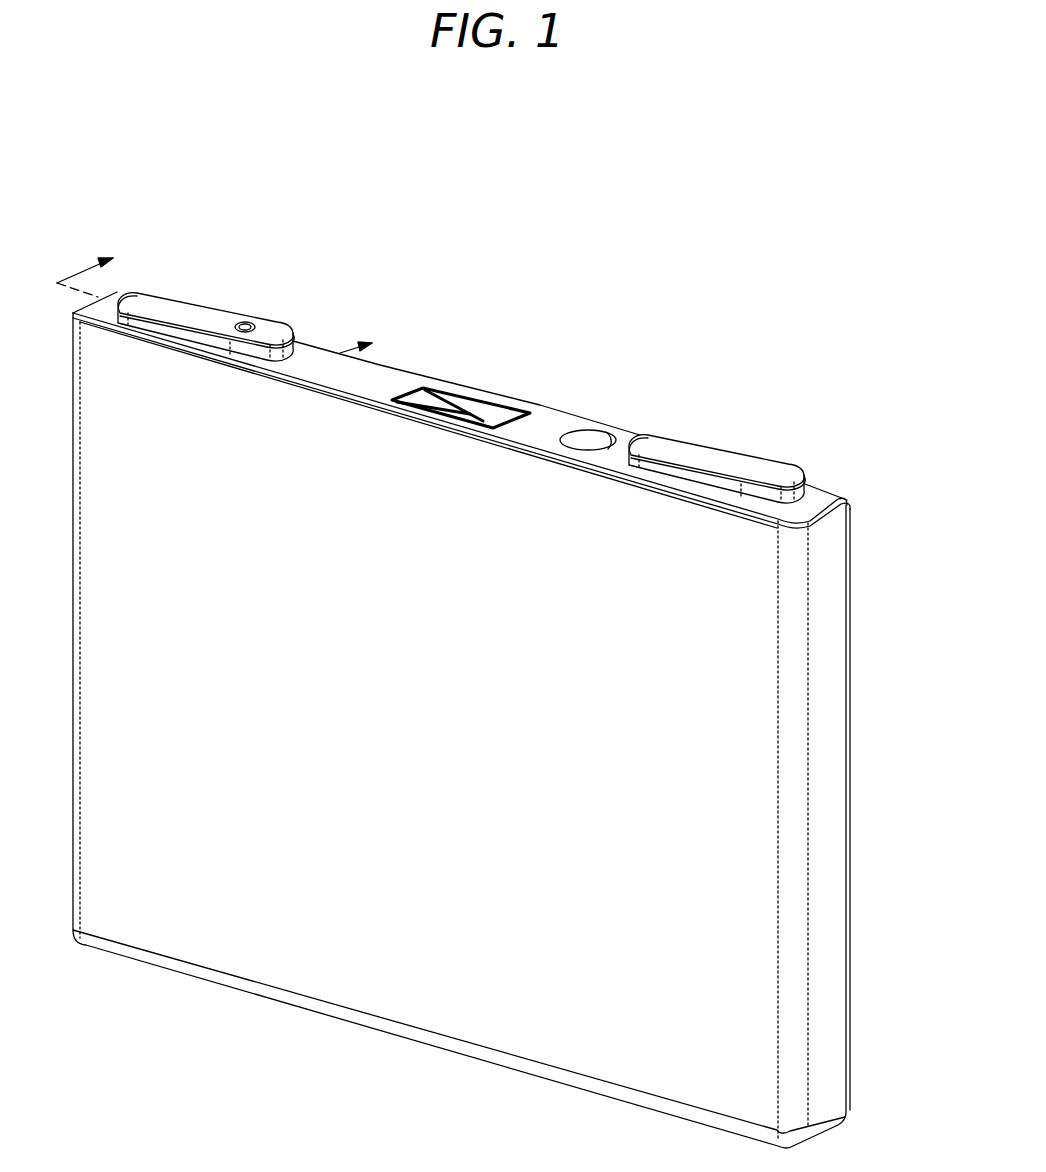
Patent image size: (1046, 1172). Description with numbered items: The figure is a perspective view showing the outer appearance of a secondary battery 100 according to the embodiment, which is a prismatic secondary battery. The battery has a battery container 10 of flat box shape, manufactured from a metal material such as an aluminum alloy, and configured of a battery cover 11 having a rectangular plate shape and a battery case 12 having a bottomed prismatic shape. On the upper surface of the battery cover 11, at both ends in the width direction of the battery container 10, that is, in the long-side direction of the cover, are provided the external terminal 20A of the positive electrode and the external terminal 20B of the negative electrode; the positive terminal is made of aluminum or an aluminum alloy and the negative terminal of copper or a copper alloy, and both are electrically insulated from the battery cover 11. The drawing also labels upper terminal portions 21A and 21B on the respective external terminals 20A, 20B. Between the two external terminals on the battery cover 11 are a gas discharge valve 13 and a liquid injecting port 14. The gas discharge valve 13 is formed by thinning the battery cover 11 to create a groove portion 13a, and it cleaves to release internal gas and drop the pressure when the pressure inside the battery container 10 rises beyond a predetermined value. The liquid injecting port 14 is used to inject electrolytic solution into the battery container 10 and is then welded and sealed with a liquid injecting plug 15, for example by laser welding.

The secondary battery 100 is at (788, 303).
The battery container 10 is at (942, 408).
The battery cover 11 is at (820, 485).
The battery case 12 is at (832, 543).
The gas discharge valve 13 is at (477, 398).
The groove portion 13a is at (460, 391).
The liquid injecting port 14 is at (608, 448).
The liquid injecting plug 15 is at (585, 441).
The external terminal of positive electrode 20A is at (212, 283).
The positive electrode terminal plate 21A is at (168, 302).
The external terminal of negative electrode 20B is at (732, 434).
The negative electrode terminal plate 21B is at (673, 444).